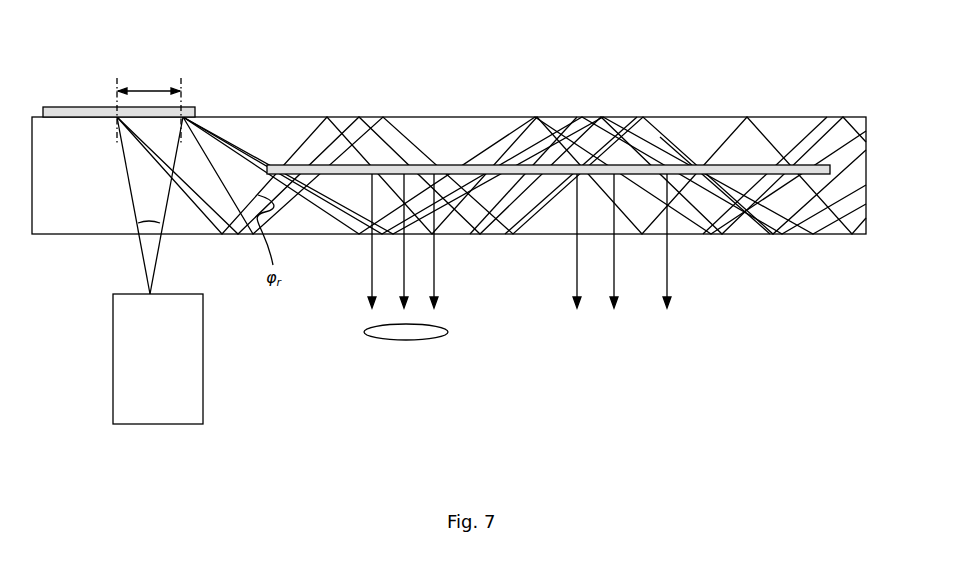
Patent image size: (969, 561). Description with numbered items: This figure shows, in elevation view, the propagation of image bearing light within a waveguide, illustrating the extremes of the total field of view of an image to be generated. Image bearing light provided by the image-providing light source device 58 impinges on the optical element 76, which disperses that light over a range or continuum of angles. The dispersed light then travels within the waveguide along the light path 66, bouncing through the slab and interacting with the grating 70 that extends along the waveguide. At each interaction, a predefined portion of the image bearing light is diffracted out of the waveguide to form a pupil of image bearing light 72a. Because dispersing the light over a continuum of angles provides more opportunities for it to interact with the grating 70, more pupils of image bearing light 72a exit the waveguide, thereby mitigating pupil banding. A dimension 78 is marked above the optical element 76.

The image-providing light source device 58 is at (180, 375).
The light path 66 is at (298, 141).
The grating 70 is at (745, 166).
The pupil of image bearing light 72a is at (405, 333).
The optical element 76 is at (193, 107).
The input coupler width 78 is at (133, 90).